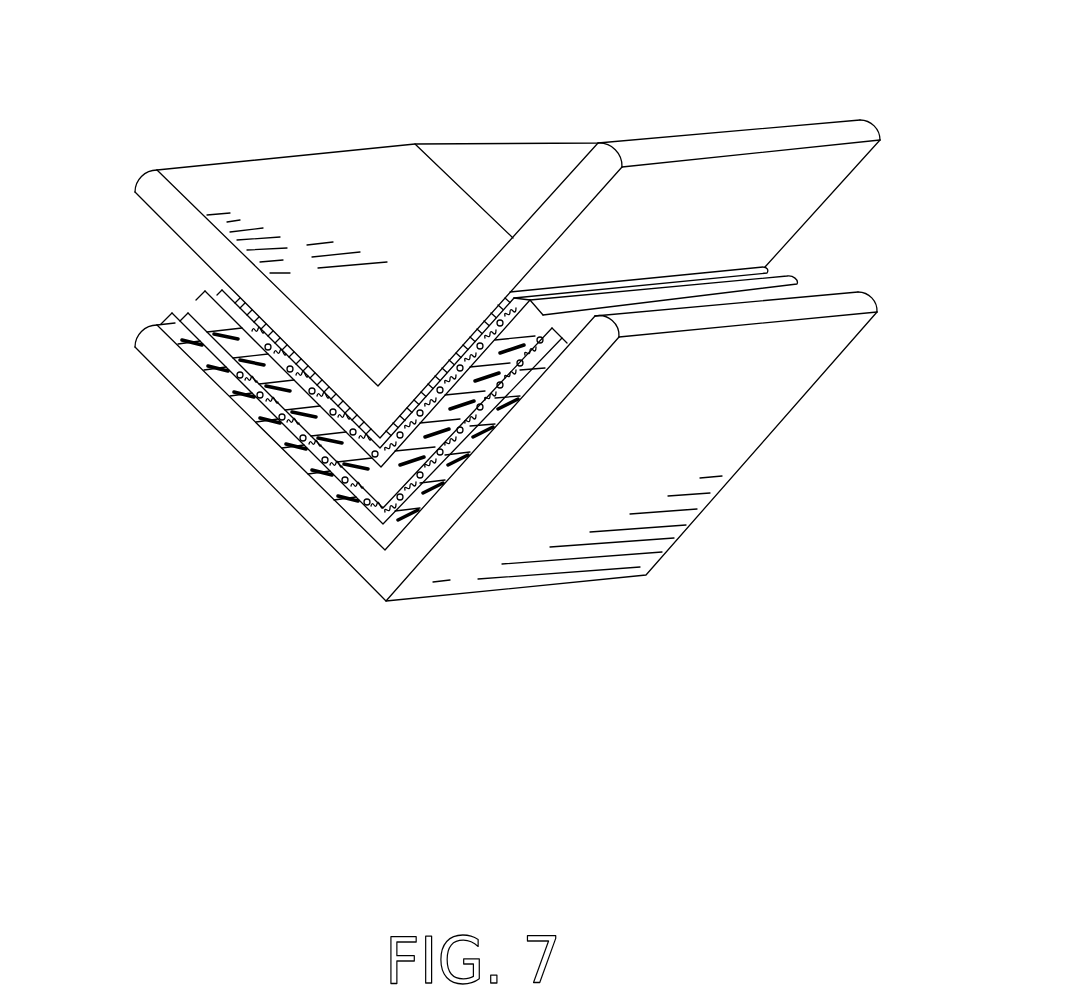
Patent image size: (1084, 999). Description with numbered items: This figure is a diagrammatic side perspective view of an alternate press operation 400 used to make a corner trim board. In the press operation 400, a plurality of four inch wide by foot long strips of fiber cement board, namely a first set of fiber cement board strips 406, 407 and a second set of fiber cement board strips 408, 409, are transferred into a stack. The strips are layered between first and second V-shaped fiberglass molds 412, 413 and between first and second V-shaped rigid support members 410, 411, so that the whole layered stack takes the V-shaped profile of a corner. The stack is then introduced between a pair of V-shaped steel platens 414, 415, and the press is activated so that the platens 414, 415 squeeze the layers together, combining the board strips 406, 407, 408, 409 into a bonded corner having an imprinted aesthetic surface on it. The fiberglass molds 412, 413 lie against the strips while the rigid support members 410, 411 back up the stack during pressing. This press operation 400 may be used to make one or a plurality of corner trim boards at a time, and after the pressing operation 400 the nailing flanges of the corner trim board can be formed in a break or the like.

The alternate press operation 400 is at (501, 340).
The fiber cement board strip 406 is at (288, 356).
The fiber cement board strip 407 is at (483, 360).
The fiber cement board strip 408 is at (288, 423).
The fiber cement board strip 409 is at (433, 473).
The first V-shaped rigid support member 410 is at (329, 382).
The second V-shaped rigid support member 411 is at (387, 468).
The first V-shaped fiberglass mold 412 is at (707, 435).
The second V-shaped fiberglass mold 413 is at (266, 368).
The V-shaped steel platen 414 is at (527, 377).
The V-shaped steel platen 415 is at (779, 135).